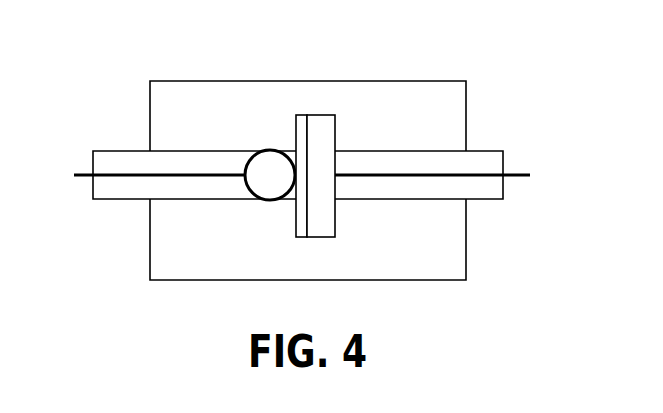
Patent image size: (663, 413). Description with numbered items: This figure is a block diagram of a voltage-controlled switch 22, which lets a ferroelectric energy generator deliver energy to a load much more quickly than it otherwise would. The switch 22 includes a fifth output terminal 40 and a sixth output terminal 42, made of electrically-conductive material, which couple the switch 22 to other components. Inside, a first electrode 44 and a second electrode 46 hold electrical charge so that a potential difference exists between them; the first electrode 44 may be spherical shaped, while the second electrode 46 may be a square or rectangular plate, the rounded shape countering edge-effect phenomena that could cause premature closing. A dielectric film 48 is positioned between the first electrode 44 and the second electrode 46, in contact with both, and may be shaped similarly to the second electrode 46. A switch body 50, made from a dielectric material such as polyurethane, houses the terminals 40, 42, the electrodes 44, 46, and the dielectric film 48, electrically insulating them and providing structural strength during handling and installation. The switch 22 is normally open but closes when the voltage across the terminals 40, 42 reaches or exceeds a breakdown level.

The voltage-controlled switch 22 is at (317, 57).
The fifth output terminal 40 is at (82, 178).
The sixth output terminal 42 is at (515, 179).
The first electrode 44 is at (277, 200).
The second electrode 46 is at (322, 224).
The dielectric film 48 is at (295, 116).
The switch body 50 is at (418, 92).